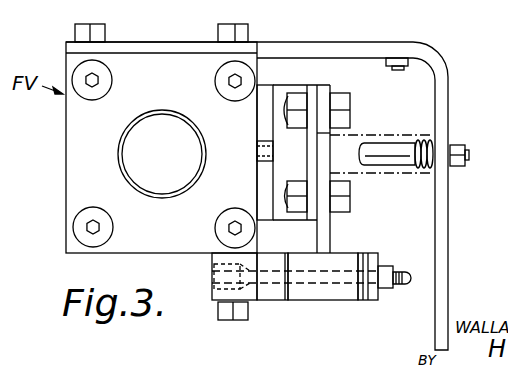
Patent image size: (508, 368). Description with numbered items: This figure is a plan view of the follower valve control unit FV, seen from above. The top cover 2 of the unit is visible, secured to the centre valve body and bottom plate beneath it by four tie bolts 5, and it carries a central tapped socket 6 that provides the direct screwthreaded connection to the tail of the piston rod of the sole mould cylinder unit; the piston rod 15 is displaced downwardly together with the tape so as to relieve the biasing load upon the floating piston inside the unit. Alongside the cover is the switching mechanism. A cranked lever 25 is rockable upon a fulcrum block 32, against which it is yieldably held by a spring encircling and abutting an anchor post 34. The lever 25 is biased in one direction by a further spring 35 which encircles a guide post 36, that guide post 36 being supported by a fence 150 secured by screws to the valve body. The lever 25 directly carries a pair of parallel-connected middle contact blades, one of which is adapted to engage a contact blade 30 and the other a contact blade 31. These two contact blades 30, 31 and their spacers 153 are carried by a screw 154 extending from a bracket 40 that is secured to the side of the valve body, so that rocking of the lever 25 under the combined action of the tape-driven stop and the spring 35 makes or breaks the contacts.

The top cover 2 is at (76, 147).
The tie bolts 5 is at (112, 80).
The central tapped socket 6 is at (119, 158).
The piston rod 15 is at (100, 32).
The cranked lever 25 is at (287, 142).
The contact blade 30 is at (280, 256).
The contact blade 31 is at (353, 257).
The fulcrum block 32 is at (267, 197).
The anchor post 34 is at (265, 153).
The spring 35 is at (417, 173).
The guide post 36 is at (386, 153).
The bracket 40 is at (250, 290).
The fence 150 is at (442, 88).
The spacers 153 is at (355, 311).
The screw 154 is at (402, 285).